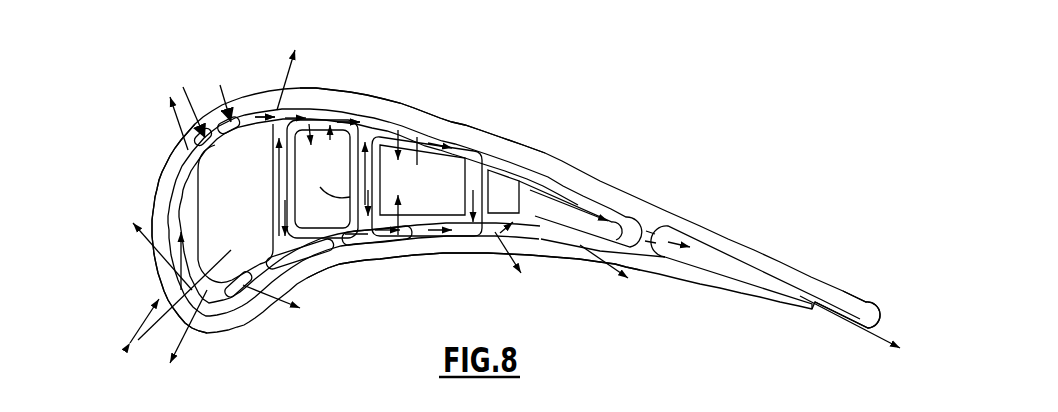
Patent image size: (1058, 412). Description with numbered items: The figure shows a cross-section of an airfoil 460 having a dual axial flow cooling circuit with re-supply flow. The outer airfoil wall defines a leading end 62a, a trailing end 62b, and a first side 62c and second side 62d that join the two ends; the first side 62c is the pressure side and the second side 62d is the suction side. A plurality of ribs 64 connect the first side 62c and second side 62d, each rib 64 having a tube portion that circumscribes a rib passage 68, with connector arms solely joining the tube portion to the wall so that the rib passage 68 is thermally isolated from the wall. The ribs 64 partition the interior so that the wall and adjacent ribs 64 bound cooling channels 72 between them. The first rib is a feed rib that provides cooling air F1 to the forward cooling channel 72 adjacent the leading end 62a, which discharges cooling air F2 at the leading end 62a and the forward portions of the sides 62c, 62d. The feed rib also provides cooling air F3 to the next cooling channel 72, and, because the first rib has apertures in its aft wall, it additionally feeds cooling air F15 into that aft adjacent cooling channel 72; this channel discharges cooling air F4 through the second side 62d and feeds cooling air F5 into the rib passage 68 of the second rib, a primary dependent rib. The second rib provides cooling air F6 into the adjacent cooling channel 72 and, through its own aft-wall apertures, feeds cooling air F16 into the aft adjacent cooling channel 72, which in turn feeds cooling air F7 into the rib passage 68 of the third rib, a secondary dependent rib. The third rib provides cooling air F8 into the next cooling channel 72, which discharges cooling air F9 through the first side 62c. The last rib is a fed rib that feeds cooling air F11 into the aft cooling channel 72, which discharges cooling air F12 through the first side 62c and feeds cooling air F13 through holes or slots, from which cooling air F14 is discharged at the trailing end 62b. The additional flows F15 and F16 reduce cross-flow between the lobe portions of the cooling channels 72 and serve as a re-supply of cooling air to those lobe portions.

The airfoil 460 is at (113, 314).
The leading end 62a is at (160, 297).
The trailing end 62b is at (879, 290).
The first side 62c is at (389, 272).
The second side 62d is at (417, 106).
The rib 64 is at (299, 247).
The rib passage 68 is at (448, 194).
The cooling channel 72 is at (226, 91).
The cooling air F1 is at (231, 252).
The cooling air F2 is at (176, 121).
The cooling air F3 is at (250, 92).
The cooling air F4 is at (283, 69).
The cooling air F5 is at (299, 110).
The cooling air F6 is at (345, 112).
The cooling air F7 is at (398, 130).
The cooling air F8 is at (430, 140).
The cooling air F9 is at (497, 285).
The cooling air F11 is at (530, 175).
The cooling air F12 is at (618, 276).
The cooling air F13 is at (669, 228).
The cooling air F14 is at (823, 310).
The cooling air F15 is at (282, 196).
The cooling air F16 is at (368, 180).